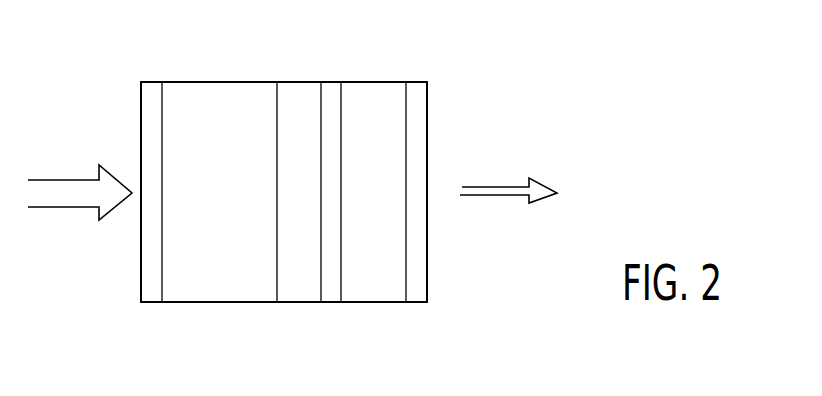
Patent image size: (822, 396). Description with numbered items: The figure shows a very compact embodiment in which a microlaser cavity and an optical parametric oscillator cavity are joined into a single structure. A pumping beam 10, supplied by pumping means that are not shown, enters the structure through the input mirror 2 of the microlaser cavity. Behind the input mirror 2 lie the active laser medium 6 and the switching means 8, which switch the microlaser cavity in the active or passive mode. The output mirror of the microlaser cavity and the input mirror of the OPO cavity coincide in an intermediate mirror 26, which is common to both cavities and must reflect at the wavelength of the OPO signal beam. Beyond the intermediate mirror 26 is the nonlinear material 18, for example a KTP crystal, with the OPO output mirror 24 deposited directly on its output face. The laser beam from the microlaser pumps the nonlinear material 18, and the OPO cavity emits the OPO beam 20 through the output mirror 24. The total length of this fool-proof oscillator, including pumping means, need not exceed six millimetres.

The input mirror 2 is at (151, 85).
The active laser medium 6 is at (207, 298).
The switching means 8 is at (287, 90).
The pumping beam 10 is at (55, 207).
The nonlinear material 18 is at (372, 90).
The OPO beam 20 is at (490, 196).
The output mirror of the OPO cavity 24 is at (413, 298).
The intermediate mirror 26 is at (328, 298).